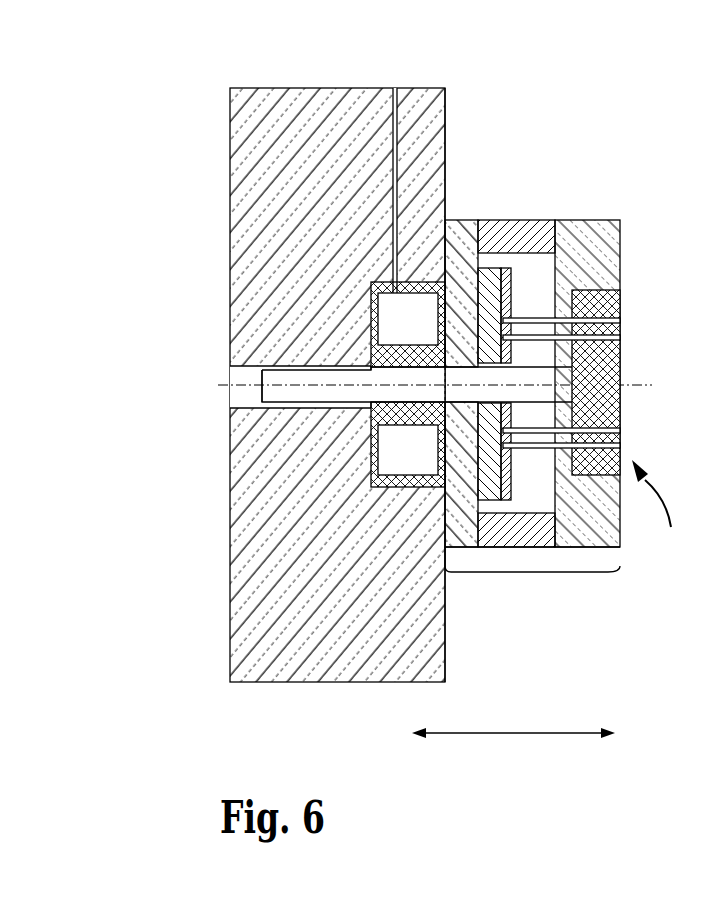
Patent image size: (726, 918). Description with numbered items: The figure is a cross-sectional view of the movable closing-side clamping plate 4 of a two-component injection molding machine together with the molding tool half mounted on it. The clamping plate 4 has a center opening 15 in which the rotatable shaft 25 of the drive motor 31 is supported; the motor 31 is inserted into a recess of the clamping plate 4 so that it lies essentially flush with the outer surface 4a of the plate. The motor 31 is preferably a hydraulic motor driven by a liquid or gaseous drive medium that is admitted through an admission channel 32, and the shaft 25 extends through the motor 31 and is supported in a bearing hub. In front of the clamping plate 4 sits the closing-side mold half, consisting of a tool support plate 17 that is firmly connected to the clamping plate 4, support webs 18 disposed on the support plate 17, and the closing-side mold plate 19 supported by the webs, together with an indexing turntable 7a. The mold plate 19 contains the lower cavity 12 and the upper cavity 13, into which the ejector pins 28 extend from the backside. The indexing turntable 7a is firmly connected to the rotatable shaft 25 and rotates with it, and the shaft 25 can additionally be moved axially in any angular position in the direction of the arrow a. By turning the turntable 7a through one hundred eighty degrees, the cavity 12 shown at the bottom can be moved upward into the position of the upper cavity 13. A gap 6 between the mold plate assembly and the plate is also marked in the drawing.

The closing-side clamping plate 4 is at (268, 663).
The outer surface of the clamping plate 4a is at (449, 104).
The center opening 15 is at (240, 381).
The rotatable shaft 25 is at (273, 393).
The admission channel 32 is at (397, 88).
The drive motor 31 is at (409, 468).
The tool support plate 17 is at (462, 227).
The support webs 18 is at (513, 230).
The closing-side mold plate 19 is at (585, 223).
The ejector pins 28 is at (622, 320).
The upper cavity 13 is at (628, 345).
The lower cavity 12 is at (626, 418).
The gap 6 is at (532, 584).
The indexing turntable 7a is at (661, 510).
The arrow a is at (513, 748).